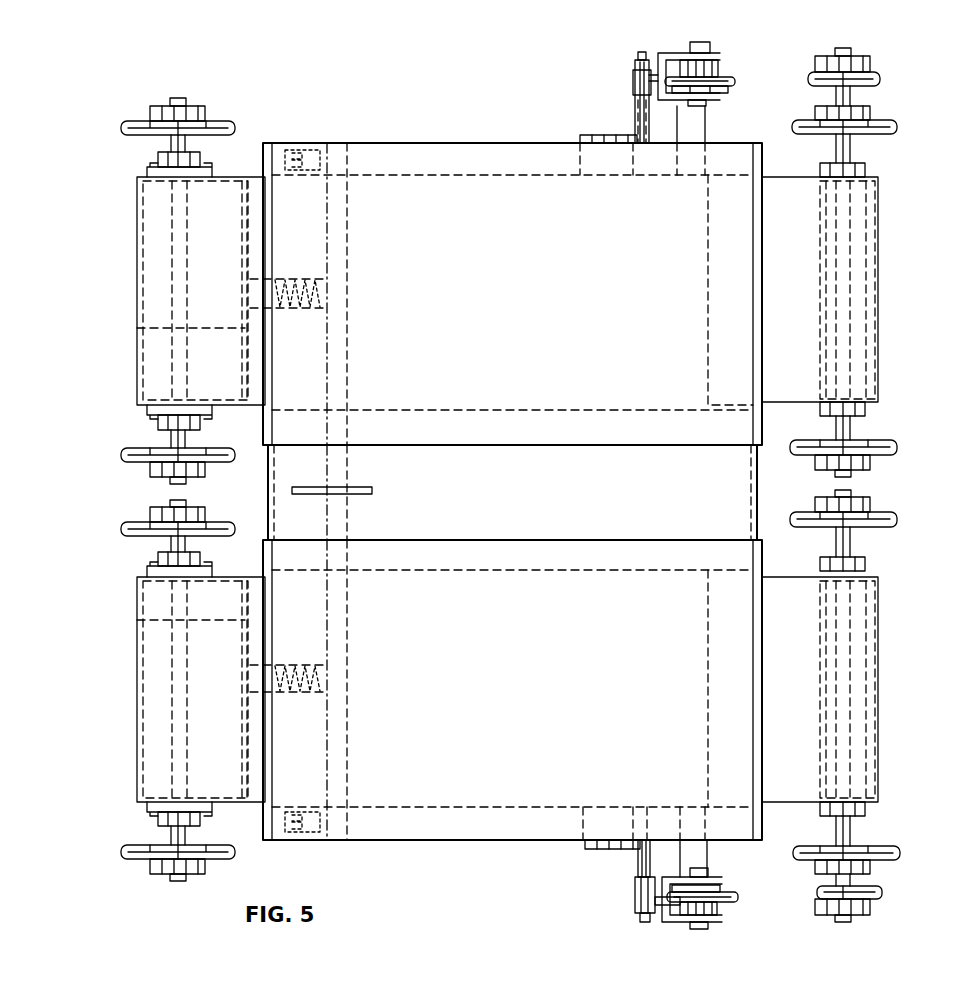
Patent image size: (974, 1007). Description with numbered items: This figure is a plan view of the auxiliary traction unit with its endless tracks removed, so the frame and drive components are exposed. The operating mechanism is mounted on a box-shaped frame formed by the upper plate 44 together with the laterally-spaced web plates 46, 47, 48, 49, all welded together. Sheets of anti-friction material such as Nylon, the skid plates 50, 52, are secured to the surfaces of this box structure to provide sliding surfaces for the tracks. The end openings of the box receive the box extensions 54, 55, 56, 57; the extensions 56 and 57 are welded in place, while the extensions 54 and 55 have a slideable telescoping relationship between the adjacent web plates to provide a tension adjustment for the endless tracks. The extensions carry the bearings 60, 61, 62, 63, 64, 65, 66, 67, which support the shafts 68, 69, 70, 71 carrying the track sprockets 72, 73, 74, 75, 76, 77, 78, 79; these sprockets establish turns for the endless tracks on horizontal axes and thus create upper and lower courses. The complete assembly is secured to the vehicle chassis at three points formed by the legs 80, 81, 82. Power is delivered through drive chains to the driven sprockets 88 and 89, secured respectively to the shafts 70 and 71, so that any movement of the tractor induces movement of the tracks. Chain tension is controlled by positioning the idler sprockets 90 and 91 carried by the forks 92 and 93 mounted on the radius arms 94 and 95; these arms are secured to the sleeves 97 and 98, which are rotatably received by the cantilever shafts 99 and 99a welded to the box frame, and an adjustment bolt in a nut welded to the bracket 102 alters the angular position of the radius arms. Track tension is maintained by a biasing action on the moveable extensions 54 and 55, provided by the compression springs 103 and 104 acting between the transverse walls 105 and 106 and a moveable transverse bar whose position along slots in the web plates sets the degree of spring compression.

The upper plate 44 is at (524, 503).
The web plate 46 is at (515, 812).
The web plate 47 is at (541, 575).
The web plate 48 is at (506, 402).
The web plate 49 is at (478, 172).
The skid plate 50 is at (514, 300).
The skid plate 52 is at (504, 695).
The box extension 54 is at (137, 674).
The box extension 55 is at (137, 274).
The box extension 56 is at (878, 308).
The box extension 57 is at (878, 693).
The bearing 60 is at (158, 821).
The bearing 61 is at (158, 563).
The bearing 62 is at (160, 424).
The bearing 63 is at (158, 158).
The bearing 64 is at (866, 172).
The bearing 65 is at (866, 413).
The bearing 66 is at (866, 566).
The bearing 67 is at (866, 810).
The shaft 68 is at (170, 546).
The shaft 69 is at (168, 144).
The shaft 70 is at (852, 148).
The shaft 71 is at (851, 546).
The track sprocket 72 is at (142, 862).
The track sprocket 73 is at (121, 531).
The track sprocket 74 is at (121, 456).
The track sprocket 75 is at (225, 124).
The track sprocket 76 is at (897, 130).
The track sprocket 77 is at (897, 452).
The track sprocket 78 is at (897, 522).
The track sprocket 79 is at (900, 853).
The leg 80 is at (578, 853).
The leg 81 is at (365, 495).
The leg 82 is at (634, 141).
The driven sprocket 88 is at (880, 80).
The driven sprocket 89 is at (882, 898).
The idler sprocket 90 is at (735, 80).
The idler sprocket 91 is at (738, 897).
The fork 92 is at (681, 52).
The fork 93 is at (722, 926).
The radius arm 94 is at (637, 82).
The radius arm 95 is at (640, 918).
The sleeve 97 is at (635, 94).
The sleeve 98 is at (635, 905).
The cantilever shaft 99 is at (650, 135).
The cantilever shaft 99a is at (638, 876).
The bracket 102 is at (707, 862).
The compression spring 103 is at (290, 668).
The compression spring 104 is at (290, 274).
The transverse wall 105 is at (137, 622).
The transverse wall 106 is at (137, 327).